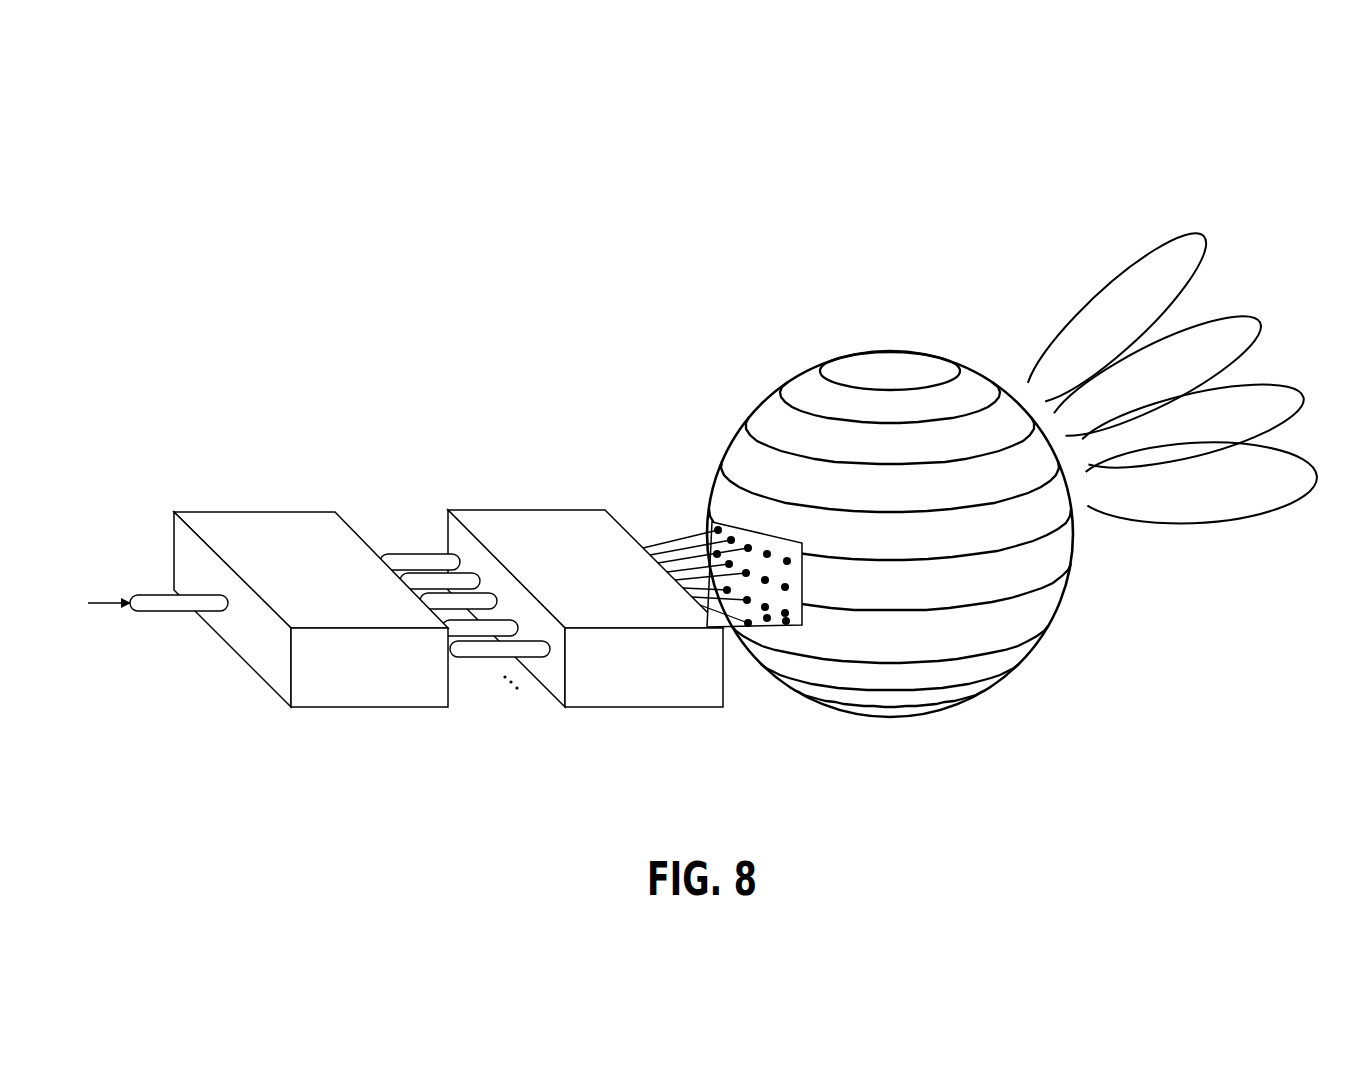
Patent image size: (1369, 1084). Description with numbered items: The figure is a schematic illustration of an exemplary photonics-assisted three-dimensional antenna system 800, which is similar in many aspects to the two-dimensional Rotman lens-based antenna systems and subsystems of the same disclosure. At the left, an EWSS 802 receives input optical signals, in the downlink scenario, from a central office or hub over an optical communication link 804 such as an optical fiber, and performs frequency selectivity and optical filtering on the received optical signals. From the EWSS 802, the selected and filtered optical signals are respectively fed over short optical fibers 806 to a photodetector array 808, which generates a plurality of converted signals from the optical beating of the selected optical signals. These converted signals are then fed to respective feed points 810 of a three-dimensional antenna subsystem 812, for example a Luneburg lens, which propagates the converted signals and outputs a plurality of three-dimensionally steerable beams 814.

The photonics-assisted three-dimensional antenna system 800 is at (1200, 170).
The EWSS 802 is at (311, 609).
The optical communication link 804 is at (152, 593).
The short optical fibers 806 is at (489, 672).
The photodetector array 808 is at (585, 608).
The feed points 810 is at (695, 523).
The 3D antenna subsystem 812 is at (960, 708).
The three-dimensionally steerable beams 814 is at (1067, 290).